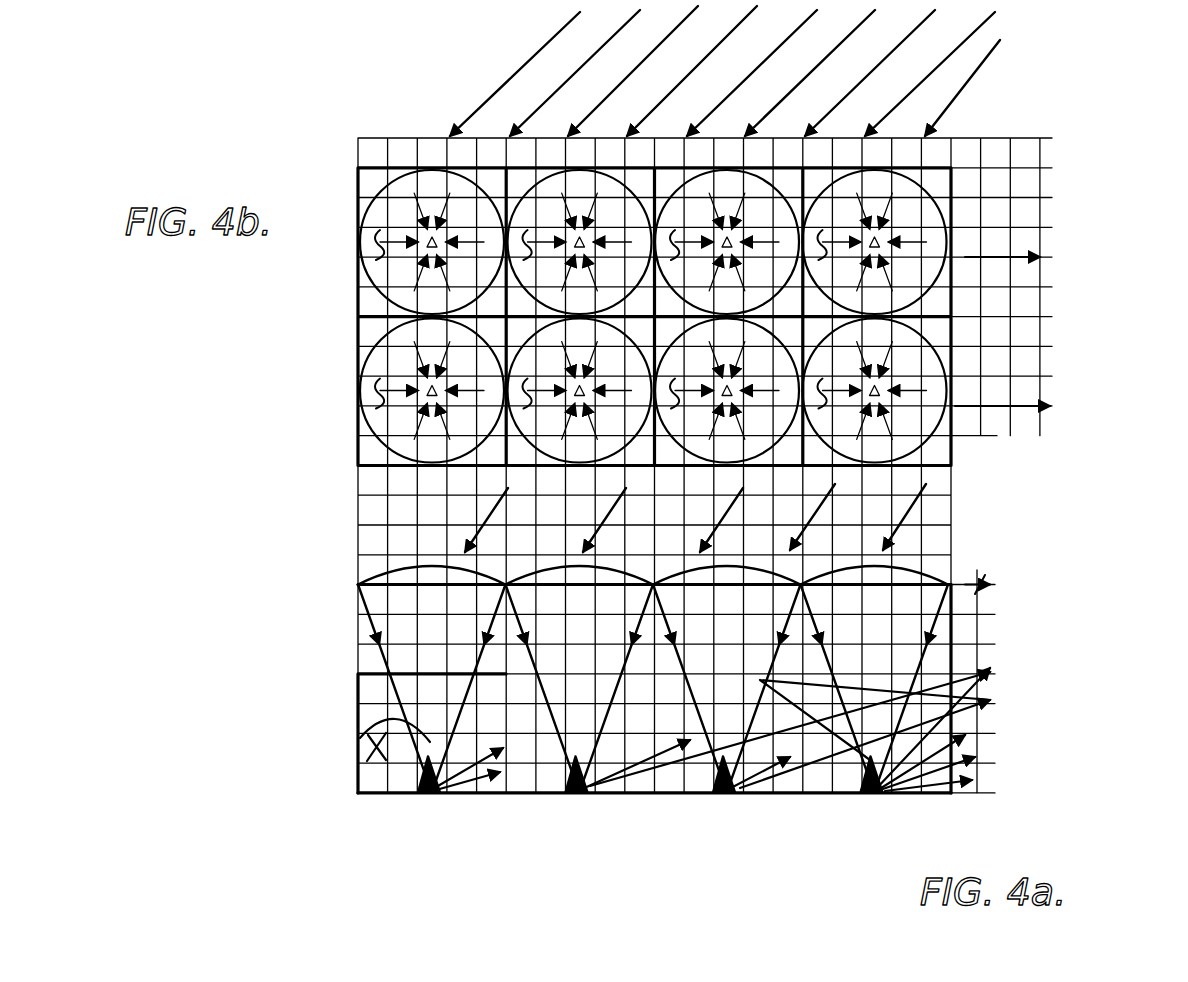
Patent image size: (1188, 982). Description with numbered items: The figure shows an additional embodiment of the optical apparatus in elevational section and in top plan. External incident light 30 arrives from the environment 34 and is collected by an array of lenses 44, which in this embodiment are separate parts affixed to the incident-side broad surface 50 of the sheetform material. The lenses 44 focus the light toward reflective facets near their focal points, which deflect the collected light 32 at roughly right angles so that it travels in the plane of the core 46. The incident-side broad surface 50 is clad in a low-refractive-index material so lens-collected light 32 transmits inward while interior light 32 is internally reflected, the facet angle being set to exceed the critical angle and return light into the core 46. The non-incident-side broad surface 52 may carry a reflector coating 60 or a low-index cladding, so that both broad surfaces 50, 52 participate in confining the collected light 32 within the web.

In FIG. 4b, the external incident light 30 is at (498, 88).
In FIG. 4a, the external incident light 30 is at (905, 515).
In FIG. 4a, the collected light 32 is at (786, 776).
In FIG. 4b, the environment 34 is at (1034, 315).
In FIG. 4a, the lens 44 is at (358, 632).
In FIG. 4a, the core 46 is at (362, 746).
In FIG. 4a, the incident-side broad surface 50 is at (367, 672).
In FIG. 4a, the non-incident-side broad surface 52 is at (515, 798).
In FIG. 4a, the reflector coating 60 is at (534, 763).